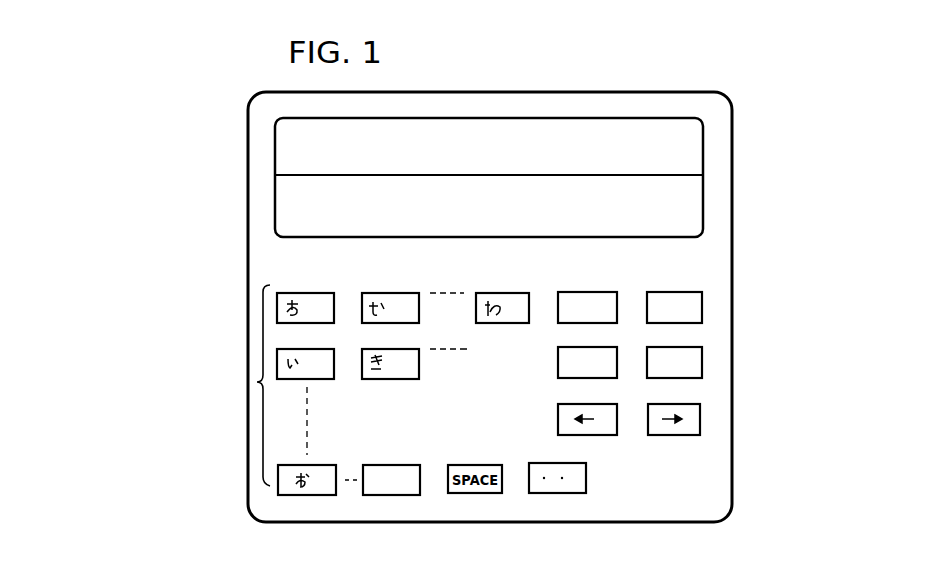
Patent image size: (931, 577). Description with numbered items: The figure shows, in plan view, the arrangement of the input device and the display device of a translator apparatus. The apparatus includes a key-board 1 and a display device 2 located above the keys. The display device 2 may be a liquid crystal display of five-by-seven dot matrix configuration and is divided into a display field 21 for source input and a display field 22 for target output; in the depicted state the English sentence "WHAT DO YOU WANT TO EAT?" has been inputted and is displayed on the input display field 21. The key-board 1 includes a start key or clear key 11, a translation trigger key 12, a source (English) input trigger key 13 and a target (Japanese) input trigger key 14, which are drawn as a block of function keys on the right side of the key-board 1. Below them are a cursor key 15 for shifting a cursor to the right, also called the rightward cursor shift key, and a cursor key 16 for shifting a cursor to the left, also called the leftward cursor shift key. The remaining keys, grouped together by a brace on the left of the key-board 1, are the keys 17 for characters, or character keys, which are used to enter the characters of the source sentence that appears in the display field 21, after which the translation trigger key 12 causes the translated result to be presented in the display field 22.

The key-board 1 is at (668, 456).
The display device 2 is at (702, 125).
The display field for source input 21 is at (700, 157).
The display field for target output 22 is at (700, 205).
The start key or clear key 11 is at (670, 292).
The translation trigger key 12 is at (585, 292).
The source (English) input trigger key 13 is at (683, 347).
The target (Japanese) input trigger key 14 is at (592, 347).
The rightward cursor shift key 15 is at (682, 404).
The leftward cursor shift key 16 is at (592, 404).
The character keys 17 is at (393, 391).